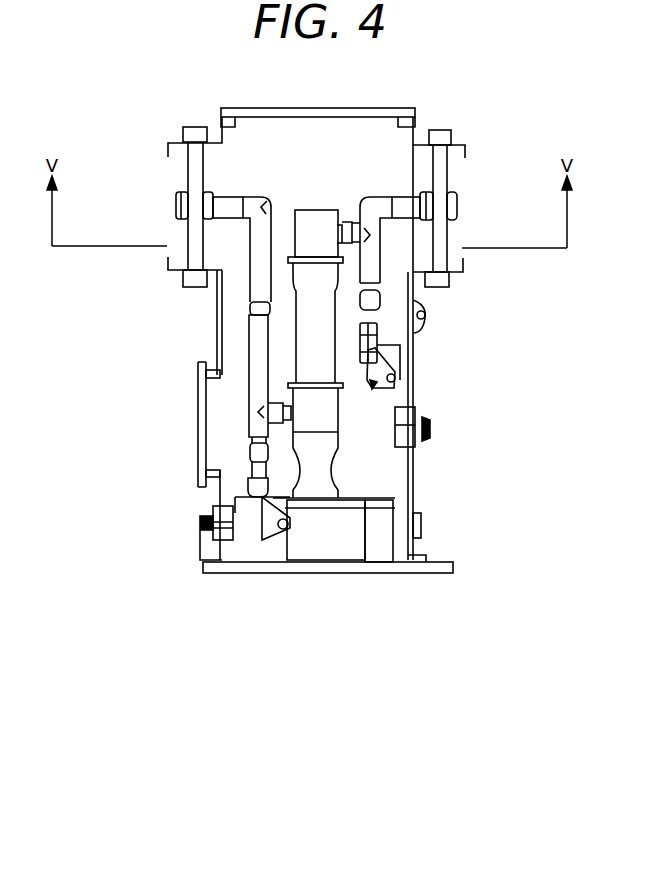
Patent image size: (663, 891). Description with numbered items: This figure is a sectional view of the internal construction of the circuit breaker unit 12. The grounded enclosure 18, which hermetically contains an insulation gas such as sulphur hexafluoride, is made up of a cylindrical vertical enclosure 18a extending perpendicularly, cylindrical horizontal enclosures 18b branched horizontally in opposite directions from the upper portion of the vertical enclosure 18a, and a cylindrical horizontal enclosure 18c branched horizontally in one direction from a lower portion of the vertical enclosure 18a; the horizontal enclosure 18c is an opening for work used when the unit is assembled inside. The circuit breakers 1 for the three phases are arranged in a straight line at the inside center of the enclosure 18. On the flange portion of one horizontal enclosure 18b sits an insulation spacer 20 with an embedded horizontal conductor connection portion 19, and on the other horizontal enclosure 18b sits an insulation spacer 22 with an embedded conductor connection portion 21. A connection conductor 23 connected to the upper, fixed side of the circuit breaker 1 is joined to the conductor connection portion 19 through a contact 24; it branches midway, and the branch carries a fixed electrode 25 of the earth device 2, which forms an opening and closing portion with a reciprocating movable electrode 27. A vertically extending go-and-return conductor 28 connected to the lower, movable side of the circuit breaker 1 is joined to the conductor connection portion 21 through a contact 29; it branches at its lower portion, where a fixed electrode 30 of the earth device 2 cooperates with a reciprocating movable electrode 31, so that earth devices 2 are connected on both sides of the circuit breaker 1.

The circuit breaker 1 is at (343, 403).
The earth device 2 is at (380, 366).
The circuit breaker unit 12 is at (387, 103).
The enclosure 18 is at (410, 392).
The vertical enclosure 18a is at (222, 313).
The horizontal enclosure 18b is at (220, 143).
The horizontal enclosure 18c is at (213, 478).
The conductor connection portion 19 is at (452, 197).
The insulation spacer 20 is at (448, 229).
The conductor connection portion 21 is at (176, 205).
The insulation spacer 22 is at (193, 167).
The connection conductor 23 is at (370, 197).
The contact 24 is at (407, 197).
The fixed electrode 25 is at (370, 300).
The movable electrode 27 is at (373, 333).
The go-and-return conductor 28 is at (260, 372).
The contact 29 is at (227, 197).
The fixed electrode 30 is at (252, 448).
The movable electrode 31 is at (252, 507).